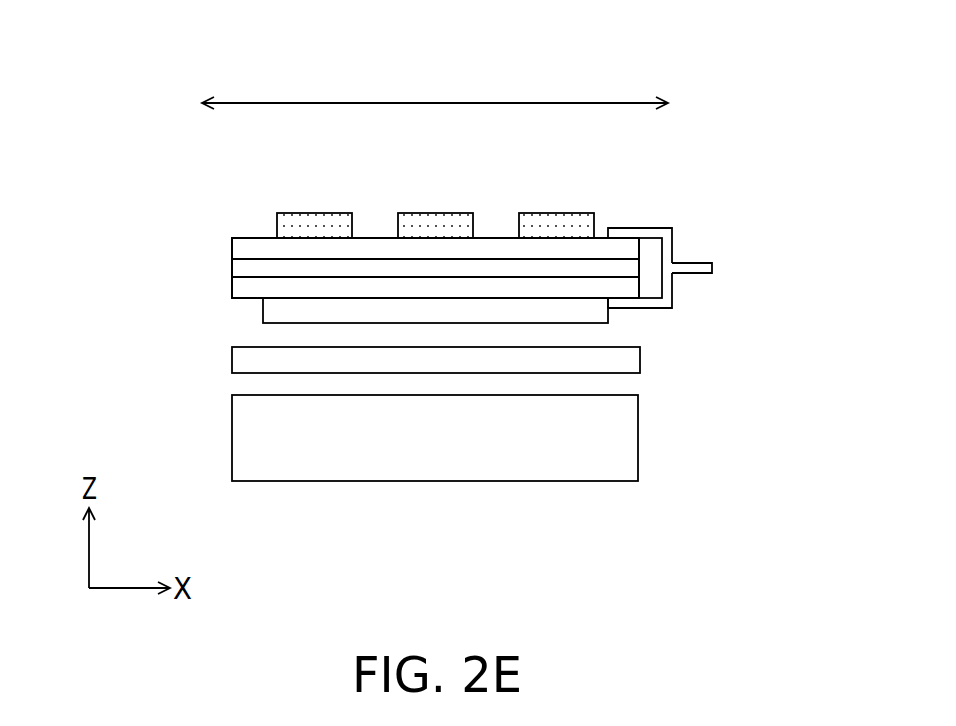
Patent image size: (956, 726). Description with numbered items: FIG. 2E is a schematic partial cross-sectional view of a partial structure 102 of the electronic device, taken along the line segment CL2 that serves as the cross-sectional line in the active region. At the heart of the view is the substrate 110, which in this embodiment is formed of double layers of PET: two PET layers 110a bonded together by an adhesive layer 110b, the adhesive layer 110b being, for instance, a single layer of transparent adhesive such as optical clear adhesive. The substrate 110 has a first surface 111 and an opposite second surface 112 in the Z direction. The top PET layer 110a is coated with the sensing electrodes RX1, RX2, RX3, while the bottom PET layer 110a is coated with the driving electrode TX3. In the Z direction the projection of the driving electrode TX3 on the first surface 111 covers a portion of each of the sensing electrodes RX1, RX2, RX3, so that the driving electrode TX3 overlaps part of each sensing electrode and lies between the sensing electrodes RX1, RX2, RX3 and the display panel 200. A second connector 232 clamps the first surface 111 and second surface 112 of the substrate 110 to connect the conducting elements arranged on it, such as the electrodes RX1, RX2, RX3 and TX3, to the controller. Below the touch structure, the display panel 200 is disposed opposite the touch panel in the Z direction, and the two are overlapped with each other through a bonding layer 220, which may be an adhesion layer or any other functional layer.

The line segment CL2 is at (435, 87).
The sensing electrode RX1 is at (315, 228).
The sensing electrode RX2 is at (435, 228).
The sensing electrode RX3 is at (557, 226).
The driving electrode TX3 is at (597, 317).
The substrate 110 is at (143, 215).
The PET layer 110a is at (242, 245).
The adhesive layer 110b is at (242, 269).
The first surface 111 is at (260, 238).
The second surface 112 is at (250, 298).
The second connector 232 is at (715, 268).
The bonding layer 220 is at (253, 358).
The display panel 200 is at (243, 438).
The partial structure 102 is at (793, 539).